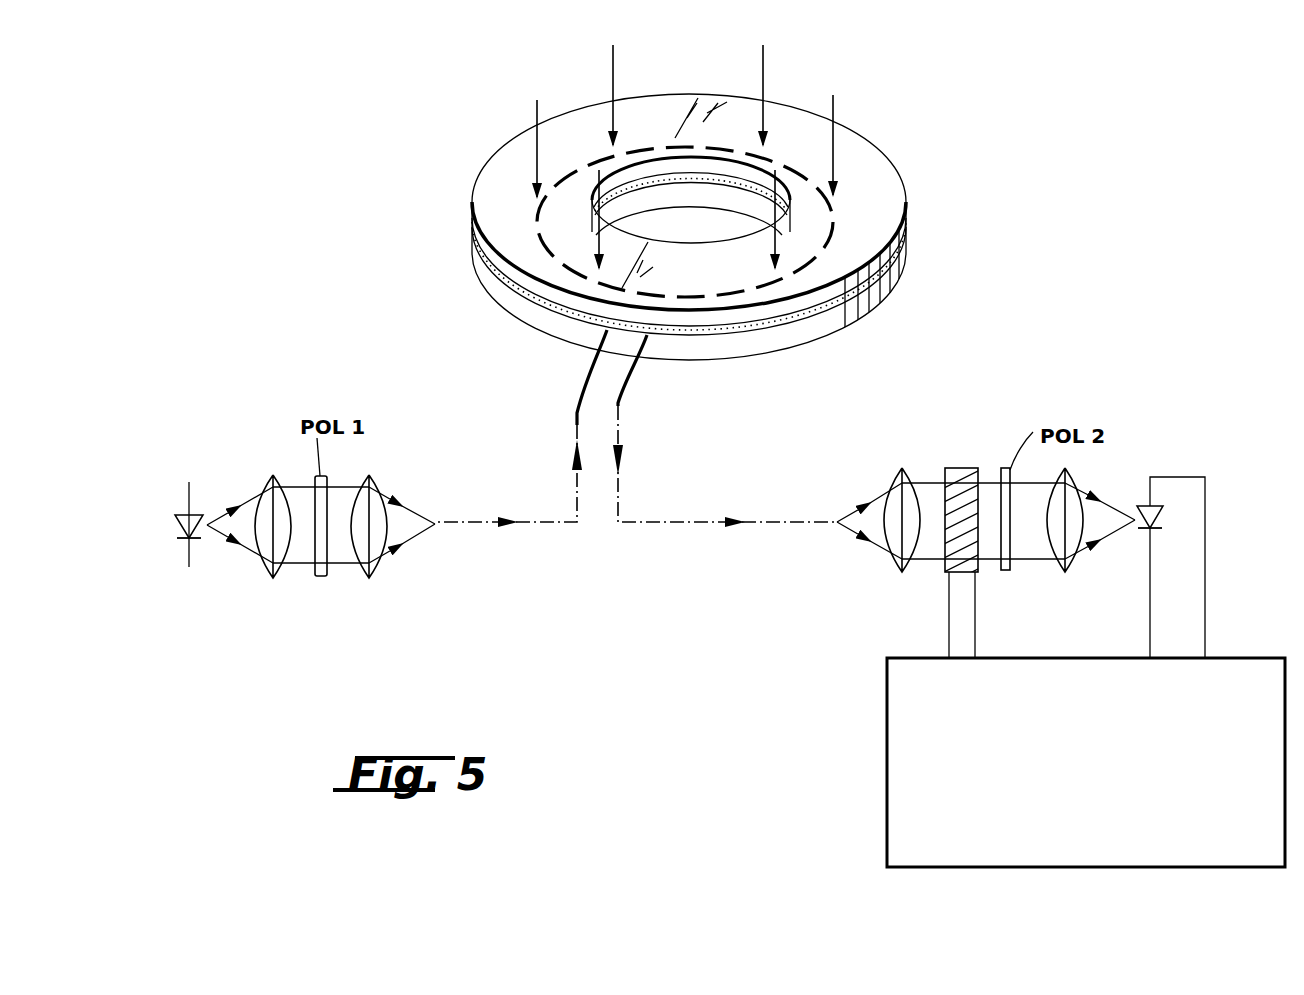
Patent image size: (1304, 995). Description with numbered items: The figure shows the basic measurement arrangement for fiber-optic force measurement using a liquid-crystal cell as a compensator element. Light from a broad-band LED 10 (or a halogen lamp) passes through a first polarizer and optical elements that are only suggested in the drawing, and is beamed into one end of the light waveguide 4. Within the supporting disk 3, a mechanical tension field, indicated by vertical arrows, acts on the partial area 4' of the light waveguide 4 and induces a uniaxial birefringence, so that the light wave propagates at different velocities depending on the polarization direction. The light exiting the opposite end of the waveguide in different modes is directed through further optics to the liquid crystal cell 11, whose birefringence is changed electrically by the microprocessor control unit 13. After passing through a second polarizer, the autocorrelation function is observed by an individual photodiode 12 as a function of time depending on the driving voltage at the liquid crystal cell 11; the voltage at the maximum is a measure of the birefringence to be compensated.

The supporting disk 3 is at (907, 217).
The light waveguide (LWL) 4 is at (636, 428).
The partial area of the LWL 4' is at (627, 222).
The broad-band LED 10 is at (187, 522).
The liquid crystal cell 11 is at (968, 477).
The photodiode 12 is at (1150, 505).
The microprocessor control unit 13 is at (892, 765).